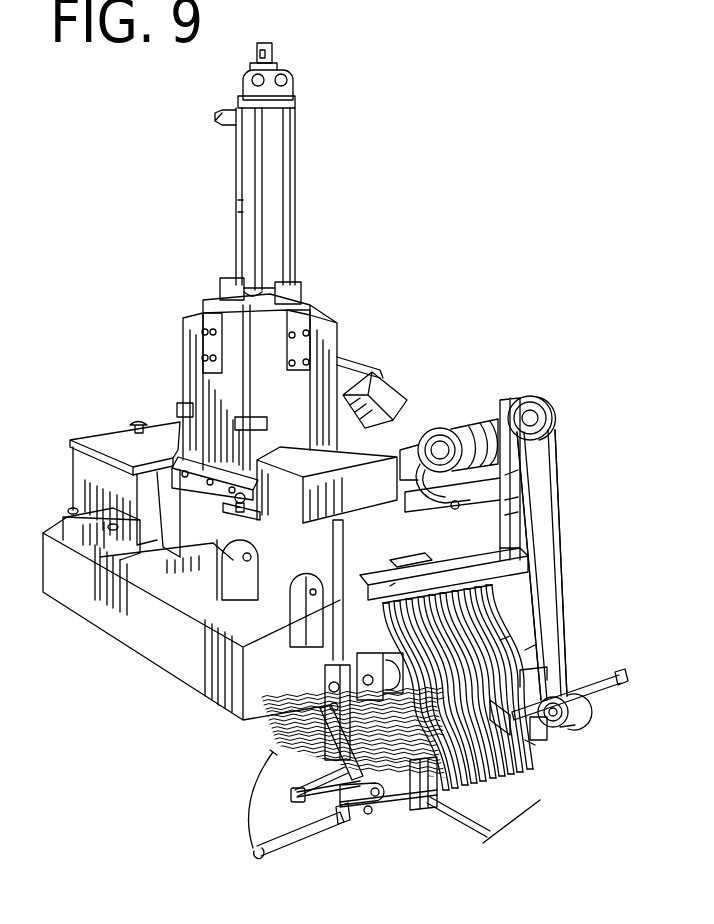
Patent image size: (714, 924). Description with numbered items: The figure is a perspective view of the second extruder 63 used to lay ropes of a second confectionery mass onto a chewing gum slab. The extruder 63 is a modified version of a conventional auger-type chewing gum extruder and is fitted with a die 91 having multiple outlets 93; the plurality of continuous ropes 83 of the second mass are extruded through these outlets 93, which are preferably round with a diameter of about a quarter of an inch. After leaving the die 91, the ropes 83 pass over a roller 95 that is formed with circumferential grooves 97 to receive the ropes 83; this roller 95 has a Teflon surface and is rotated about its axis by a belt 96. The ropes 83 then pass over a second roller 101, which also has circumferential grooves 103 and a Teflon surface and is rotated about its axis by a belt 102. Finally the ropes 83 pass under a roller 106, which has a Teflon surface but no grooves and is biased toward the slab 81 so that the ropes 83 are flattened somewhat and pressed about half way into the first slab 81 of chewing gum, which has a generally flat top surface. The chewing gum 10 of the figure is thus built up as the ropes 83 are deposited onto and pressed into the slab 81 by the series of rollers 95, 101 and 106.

The second extruder 63 is at (372, 267).
The spring 10 is at (372, 615).
The slab 81 is at (563, 787).
The ropes 83 is at (473, 607).
The die 91 is at (390, 586).
The outlets 93 is at (366, 622).
The roller 95 is at (530, 647).
The belt 96 is at (530, 487).
The circumferential grooves 97 is at (505, 640).
The roller 101 is at (570, 727).
The belt 102 is at (567, 657).
The circumferential grooves 103 is at (533, 715).
The roller 106 is at (577, 773).